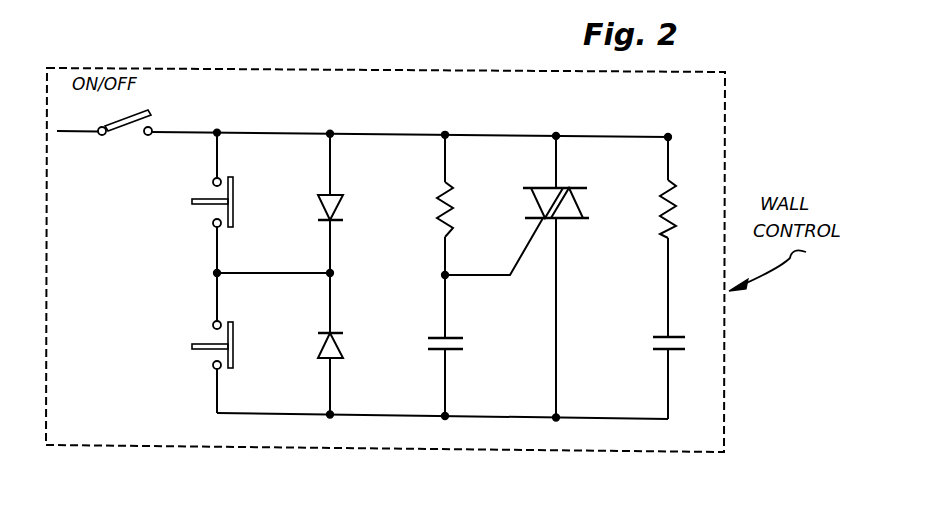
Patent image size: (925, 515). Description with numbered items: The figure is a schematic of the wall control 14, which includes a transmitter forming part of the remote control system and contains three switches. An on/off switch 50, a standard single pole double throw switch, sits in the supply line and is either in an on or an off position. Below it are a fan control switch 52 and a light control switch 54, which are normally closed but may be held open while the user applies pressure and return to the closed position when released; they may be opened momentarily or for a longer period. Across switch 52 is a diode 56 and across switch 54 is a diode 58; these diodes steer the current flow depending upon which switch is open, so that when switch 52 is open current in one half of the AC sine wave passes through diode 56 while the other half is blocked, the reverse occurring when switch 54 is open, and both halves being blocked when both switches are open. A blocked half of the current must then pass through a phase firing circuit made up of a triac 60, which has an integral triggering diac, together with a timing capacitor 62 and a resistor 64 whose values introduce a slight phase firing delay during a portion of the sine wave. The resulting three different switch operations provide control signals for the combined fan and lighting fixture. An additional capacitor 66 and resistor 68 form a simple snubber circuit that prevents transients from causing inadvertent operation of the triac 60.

The wall control 14 is at (90, 447).
The on/off switch 50 is at (128, 137).
The fan control switch 52 is at (234, 201).
The light control switch 54 is at (234, 346).
The diode 56 is at (342, 204).
The diode 58 is at (334, 352).
The triac 60 is at (584, 198).
The timing capacitor 62 is at (465, 344).
The resistor 64 is at (455, 198).
The capacitor 66 is at (649, 342).
The resistor 68 is at (683, 207).